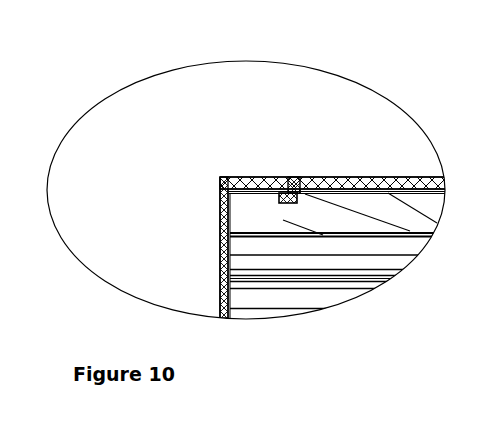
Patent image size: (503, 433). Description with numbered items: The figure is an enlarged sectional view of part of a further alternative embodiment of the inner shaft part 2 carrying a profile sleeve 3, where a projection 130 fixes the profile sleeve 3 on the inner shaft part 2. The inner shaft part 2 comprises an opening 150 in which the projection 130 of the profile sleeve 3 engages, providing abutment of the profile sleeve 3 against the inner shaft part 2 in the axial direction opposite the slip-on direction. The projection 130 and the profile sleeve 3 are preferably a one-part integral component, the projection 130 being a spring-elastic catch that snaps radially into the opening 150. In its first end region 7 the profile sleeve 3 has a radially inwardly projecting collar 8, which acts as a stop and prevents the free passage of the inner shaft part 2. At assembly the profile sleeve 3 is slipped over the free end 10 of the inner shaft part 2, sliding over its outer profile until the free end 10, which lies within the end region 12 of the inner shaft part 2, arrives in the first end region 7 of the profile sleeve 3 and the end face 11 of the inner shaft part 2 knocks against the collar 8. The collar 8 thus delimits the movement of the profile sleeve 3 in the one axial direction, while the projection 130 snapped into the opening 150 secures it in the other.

The inner shaft part 2 is at (390, 210).
The profile sleeve 3 is at (390, 177).
The first end region 7 is at (232, 217).
The collar 8 is at (206, 261).
The free end 10 is at (247, 220).
The end face 11 is at (238, 215).
The end region 12 is at (257, 195).
The projection 130 is at (297, 177).
The opening 150 is at (295, 210).